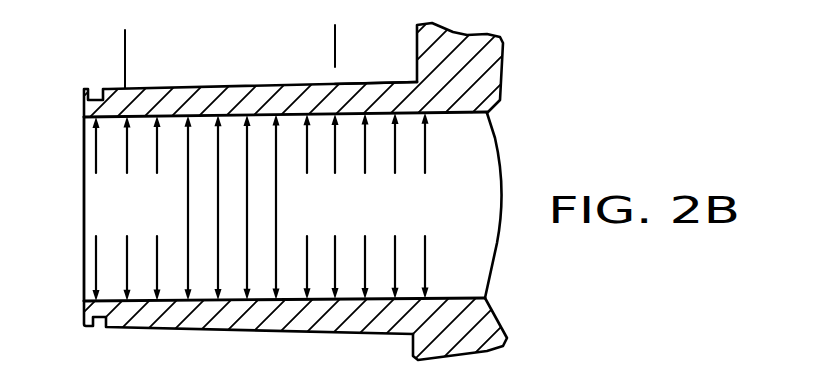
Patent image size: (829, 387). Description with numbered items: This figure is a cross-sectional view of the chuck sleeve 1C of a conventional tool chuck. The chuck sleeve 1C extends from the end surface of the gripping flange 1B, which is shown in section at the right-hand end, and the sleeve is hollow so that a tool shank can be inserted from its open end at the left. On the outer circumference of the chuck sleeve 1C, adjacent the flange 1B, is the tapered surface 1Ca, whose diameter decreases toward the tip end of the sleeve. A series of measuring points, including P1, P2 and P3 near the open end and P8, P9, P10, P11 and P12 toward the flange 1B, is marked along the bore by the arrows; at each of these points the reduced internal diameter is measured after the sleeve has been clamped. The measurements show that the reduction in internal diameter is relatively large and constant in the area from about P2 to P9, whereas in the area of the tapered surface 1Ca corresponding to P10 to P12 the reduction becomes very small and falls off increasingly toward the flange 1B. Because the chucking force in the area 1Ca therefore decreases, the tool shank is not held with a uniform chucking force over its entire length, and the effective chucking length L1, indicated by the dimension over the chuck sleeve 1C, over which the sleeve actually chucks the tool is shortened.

The gripping flange 1B is at (502, 66).
The chuck sleeve 1C is at (184, 100).
The tapered surface 1Ca is at (412, 80).
The effective chucking length L1 is at (335, 42).
The measurement point P1 is at (100, 209).
The measurement point P2 is at (125, 209).
The measurement point P3 is at (154, 208).
The measurement point P8 is at (299, 206).
The measurement point P9 is at (327, 206).
The measurement point P10 is at (363, 206).
The measurement point P11 is at (400, 206).
The measurement point P12 is at (435, 206).